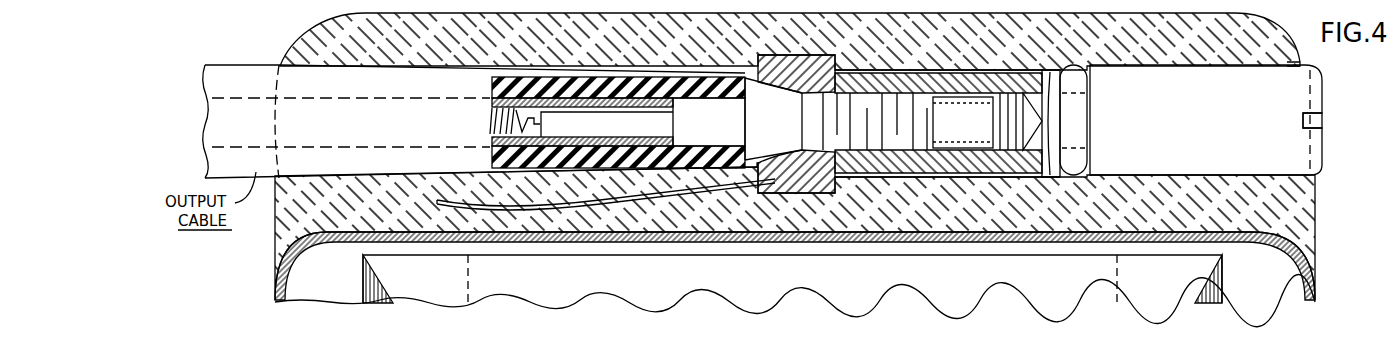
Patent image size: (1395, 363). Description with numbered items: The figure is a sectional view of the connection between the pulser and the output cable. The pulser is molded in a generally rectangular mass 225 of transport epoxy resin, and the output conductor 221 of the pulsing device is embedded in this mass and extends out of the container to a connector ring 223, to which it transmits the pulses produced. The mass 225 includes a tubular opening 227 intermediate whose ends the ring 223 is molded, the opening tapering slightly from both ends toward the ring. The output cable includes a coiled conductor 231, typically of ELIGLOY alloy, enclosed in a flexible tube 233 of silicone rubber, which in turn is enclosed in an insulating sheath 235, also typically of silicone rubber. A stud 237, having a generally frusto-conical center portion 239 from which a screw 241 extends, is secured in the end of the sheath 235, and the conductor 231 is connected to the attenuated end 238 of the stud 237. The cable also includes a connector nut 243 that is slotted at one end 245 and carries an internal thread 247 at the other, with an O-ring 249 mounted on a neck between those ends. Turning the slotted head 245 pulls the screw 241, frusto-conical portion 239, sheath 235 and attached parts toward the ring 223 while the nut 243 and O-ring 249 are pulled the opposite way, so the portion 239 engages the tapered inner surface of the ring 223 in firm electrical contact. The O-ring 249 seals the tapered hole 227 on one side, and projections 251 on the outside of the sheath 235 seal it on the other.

The output conductor 221 is at (489, 203).
The connector ring 223 is at (790, 162).
The generally rectangular mass 225 is at (333, 23).
The tubular opening 227 is at (1291, 64).
The coiled conductor 231 is at (492, 124).
The flexible tube 233 is at (584, 138).
The insulating sheath 235 is at (624, 150).
The stud 237 is at (762, 95).
The attenuated end 238 is at (662, 128).
The frusto-conical center portion 239 is at (746, 129).
The screw 241 is at (926, 112).
The connector nut 243 is at (1226, 137).
The slotted end 245 is at (1319, 146).
The internal thread 247 is at (1000, 126).
The O-ring 249 is at (1087, 160).
The projections 251 is at (702, 80).